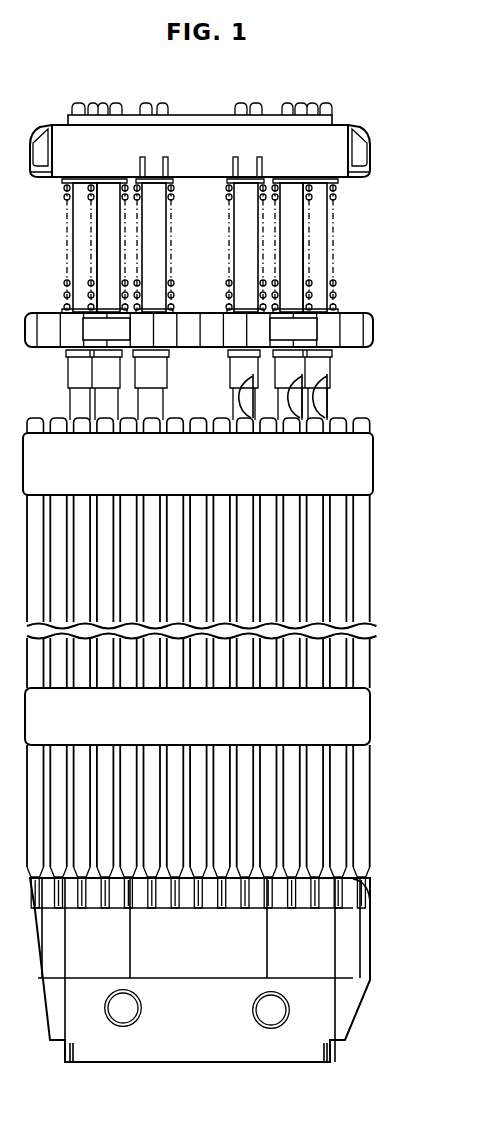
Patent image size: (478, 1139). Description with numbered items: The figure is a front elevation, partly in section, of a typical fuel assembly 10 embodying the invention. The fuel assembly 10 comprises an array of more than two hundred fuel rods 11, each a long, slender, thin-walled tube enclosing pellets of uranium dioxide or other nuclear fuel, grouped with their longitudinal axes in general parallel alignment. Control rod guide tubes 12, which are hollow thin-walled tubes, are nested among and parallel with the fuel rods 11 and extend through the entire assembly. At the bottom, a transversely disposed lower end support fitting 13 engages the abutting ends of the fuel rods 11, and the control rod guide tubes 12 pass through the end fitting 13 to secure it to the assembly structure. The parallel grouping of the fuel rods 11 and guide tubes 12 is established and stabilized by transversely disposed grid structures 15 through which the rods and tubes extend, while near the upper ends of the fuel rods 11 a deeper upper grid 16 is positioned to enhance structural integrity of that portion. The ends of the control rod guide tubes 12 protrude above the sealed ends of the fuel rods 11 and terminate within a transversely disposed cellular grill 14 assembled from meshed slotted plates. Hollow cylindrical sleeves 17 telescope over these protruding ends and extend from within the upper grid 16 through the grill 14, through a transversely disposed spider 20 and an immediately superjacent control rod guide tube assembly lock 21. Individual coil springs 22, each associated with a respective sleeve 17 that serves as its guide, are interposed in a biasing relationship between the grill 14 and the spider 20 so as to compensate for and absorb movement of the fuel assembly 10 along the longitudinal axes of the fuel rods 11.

The fuel assembly 10 is at (378, 569).
The fuel rods 11 is at (250, 525).
The control rod guide tubes 12 is at (318, 392).
The lower end support fitting 13 is at (228, 1033).
The grill 14 is at (348, 325).
The grid structures 15 is at (348, 727).
The upper grid 16 is at (365, 455).
The hollow cylindrical sleeves 17 is at (320, 232).
The spider 20 is at (315, 145).
The control rod guide tube assembly lock 21 is at (203, 120).
The coil springs 22 is at (275, 284).